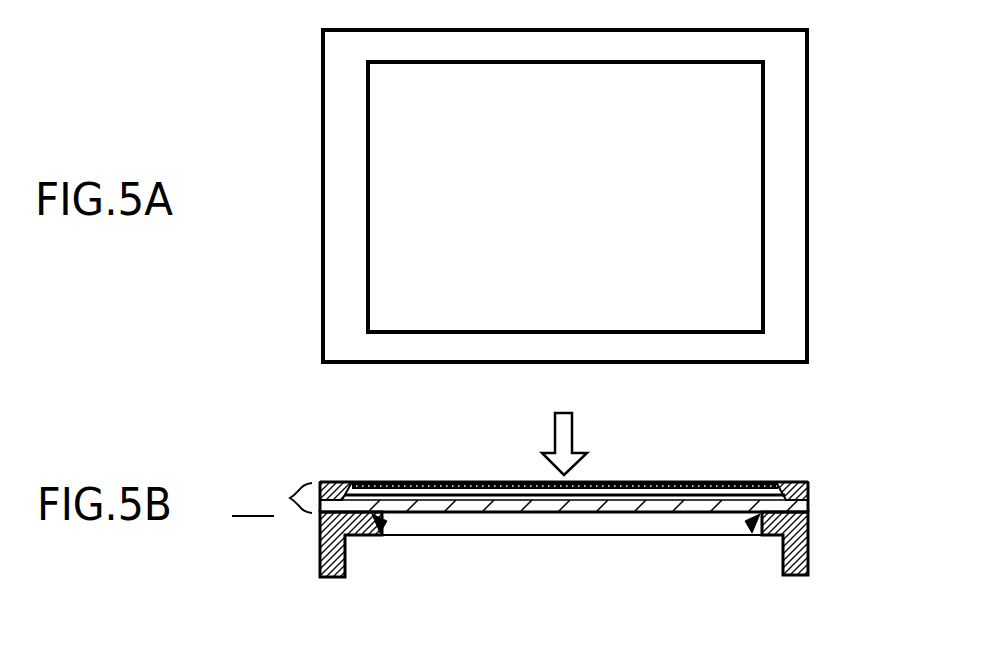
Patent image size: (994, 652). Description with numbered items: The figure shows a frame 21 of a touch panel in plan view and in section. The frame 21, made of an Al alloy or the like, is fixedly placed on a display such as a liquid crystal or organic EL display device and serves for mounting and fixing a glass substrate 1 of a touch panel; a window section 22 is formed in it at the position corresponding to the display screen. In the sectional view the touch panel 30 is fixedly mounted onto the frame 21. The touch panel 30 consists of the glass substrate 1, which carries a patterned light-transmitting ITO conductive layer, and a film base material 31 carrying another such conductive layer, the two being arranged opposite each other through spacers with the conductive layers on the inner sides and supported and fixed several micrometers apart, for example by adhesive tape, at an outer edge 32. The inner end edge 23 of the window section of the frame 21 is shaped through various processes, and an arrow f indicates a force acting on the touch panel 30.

In FIG. 5B, the glass substrate 1 is at (808, 508).
In FIG. 5A, the frame 21 is at (807, 87).
In FIG. 5B, the frame 21 is at (808, 545).
In FIG. 5A, the window section 22 is at (758, 257).
In FIG. 5B, the inner end edge 23 is at (377, 530).
In FIG. 5B, the touch panel 30 is at (272, 500).
In FIG. 5B, the film base material 31 is at (729, 481).
In FIG. 5B, the outer edge 32 is at (812, 481).
In FIG. 5B, the applied force f is at (573, 423).